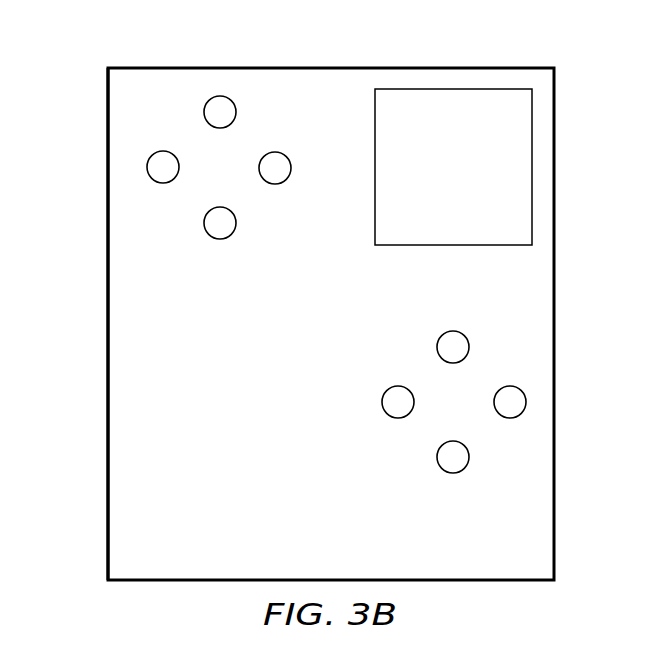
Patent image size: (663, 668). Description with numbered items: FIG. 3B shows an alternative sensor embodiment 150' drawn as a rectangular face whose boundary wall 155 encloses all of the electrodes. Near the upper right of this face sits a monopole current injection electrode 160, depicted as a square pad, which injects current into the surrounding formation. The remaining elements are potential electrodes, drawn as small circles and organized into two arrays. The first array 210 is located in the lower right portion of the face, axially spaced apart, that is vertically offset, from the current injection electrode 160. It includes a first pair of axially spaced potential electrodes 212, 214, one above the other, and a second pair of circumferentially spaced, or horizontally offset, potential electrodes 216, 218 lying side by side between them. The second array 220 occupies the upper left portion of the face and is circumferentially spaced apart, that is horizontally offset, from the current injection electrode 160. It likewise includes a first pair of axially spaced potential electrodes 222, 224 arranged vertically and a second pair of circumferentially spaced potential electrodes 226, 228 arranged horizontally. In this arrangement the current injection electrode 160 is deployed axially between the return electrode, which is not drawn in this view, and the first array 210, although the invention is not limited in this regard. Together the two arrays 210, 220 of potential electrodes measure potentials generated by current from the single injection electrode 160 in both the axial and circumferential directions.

The sensor 150' is at (331, 290).
The housing wall 155 is at (127, 398).
The monopole current injection electrode 160 is at (474, 183).
The first array of potential electrodes 210 is at (421, 412).
The potential electrode 212 is at (467, 340).
The potential electrode 214 is at (448, 472).
The potential electrode 216 is at (386, 390).
The potential electrode 218 is at (510, 418).
The second array of potential electrodes 220 is at (236, 198).
The potential electrode 222 is at (204, 112).
The potential electrode 224 is at (220, 239).
The potential electrode 226 is at (160, 183).
The potential electrode 228 is at (287, 156).